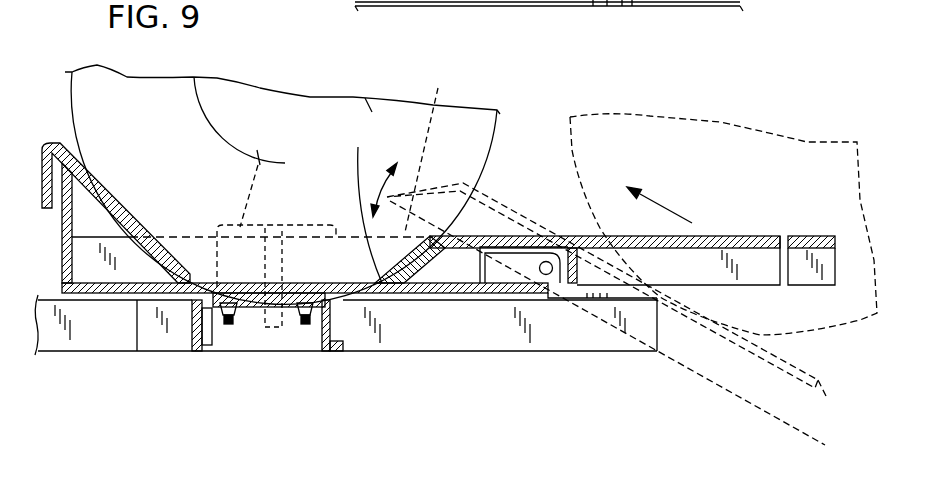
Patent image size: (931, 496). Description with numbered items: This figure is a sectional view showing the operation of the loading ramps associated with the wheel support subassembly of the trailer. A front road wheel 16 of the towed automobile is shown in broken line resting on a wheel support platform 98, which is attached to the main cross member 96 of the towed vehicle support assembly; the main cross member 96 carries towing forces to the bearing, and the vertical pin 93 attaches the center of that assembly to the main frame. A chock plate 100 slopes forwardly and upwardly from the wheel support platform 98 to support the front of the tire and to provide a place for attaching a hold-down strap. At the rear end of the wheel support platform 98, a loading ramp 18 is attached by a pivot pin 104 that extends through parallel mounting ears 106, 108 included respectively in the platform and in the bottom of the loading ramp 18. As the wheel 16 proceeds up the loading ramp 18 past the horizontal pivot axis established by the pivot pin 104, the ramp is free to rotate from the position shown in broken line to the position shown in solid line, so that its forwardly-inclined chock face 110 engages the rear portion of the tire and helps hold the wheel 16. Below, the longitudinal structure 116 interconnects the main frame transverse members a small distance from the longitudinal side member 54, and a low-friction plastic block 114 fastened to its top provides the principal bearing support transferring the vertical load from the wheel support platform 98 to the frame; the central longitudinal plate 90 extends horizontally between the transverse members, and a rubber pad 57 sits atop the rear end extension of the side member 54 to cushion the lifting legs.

The front road wheel 16 is at (76, 113).
The loading ramp 18 is at (797, 236).
The longitudinal side member 54 is at (53, 327).
The rubber pad 57 is at (640, 288).
The central longitudinal plate 90 is at (103, 297).
The vertical pin 93 is at (285, 262).
The main cross member 96 is at (239, 152).
The wheel support platform 98 is at (203, 287).
The chock plate 100 is at (78, 172).
The pivot pin 104 is at (549, 275).
The mounting ear 106 is at (499, 272).
The mounting ear 108 is at (481, 260).
The chock face 110 is at (328, 157).
The block 114 is at (278, 303).
The longitudinal structure 116 is at (257, 305).